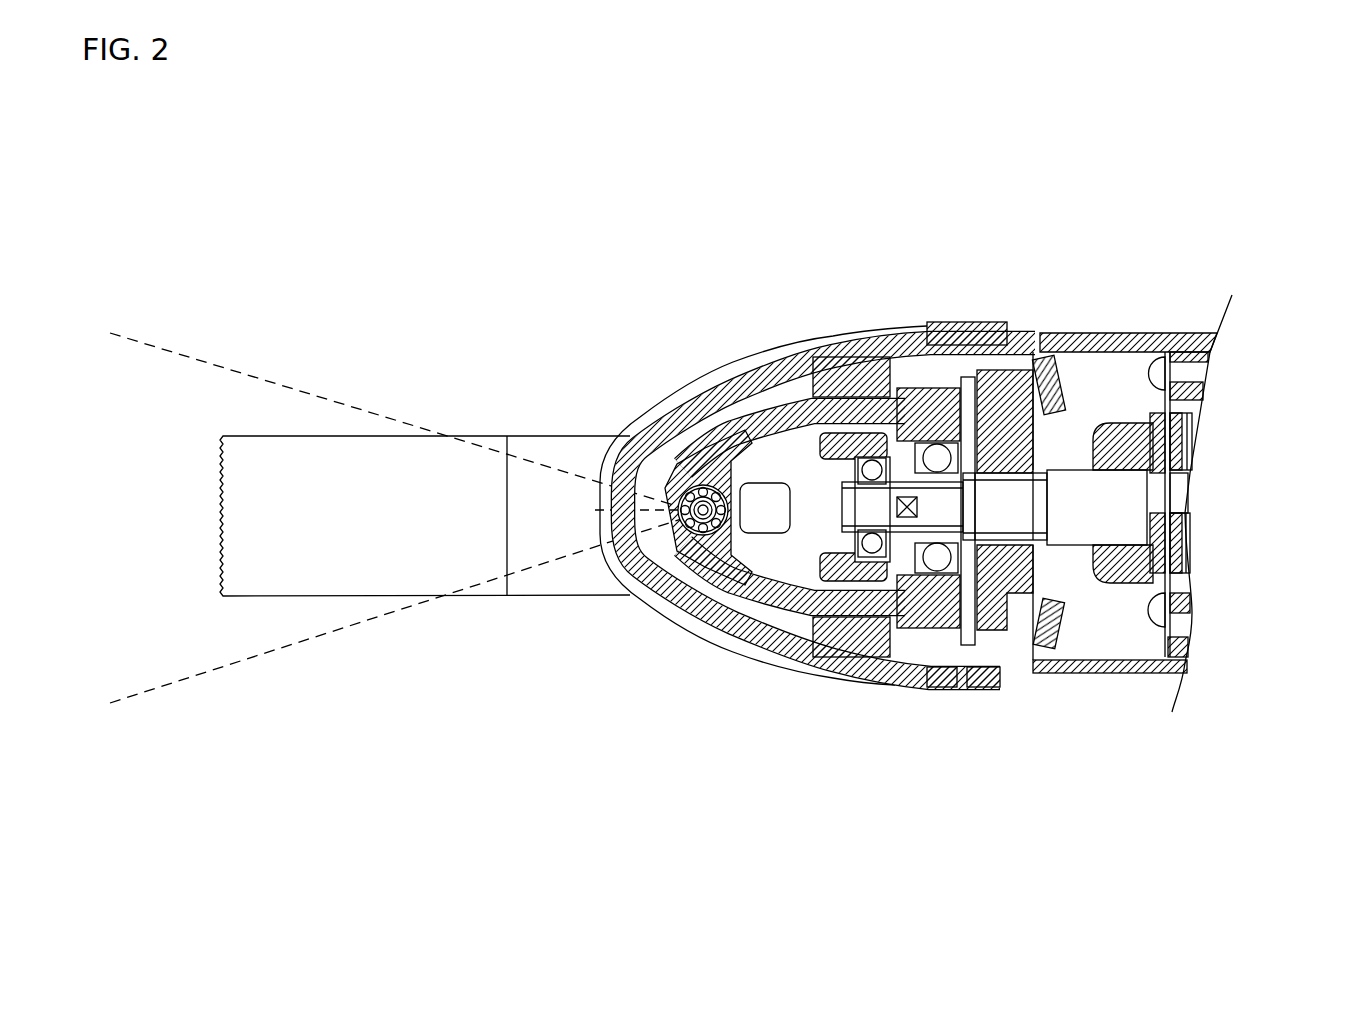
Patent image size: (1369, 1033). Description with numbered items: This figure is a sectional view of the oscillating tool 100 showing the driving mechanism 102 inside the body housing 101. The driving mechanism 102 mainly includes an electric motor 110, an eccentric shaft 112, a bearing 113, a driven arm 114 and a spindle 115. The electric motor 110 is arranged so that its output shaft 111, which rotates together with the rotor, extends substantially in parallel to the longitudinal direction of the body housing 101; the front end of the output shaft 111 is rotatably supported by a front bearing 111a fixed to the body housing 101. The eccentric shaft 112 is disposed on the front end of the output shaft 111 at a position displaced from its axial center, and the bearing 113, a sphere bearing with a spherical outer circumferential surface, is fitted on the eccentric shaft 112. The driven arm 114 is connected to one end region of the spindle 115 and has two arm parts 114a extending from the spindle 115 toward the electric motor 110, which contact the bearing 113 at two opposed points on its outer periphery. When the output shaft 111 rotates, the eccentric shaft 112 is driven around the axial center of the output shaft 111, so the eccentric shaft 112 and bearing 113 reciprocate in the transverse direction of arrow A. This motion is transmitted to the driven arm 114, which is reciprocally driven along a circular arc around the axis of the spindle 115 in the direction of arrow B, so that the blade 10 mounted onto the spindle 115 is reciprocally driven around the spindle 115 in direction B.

The blade 10 is at (262, 478).
The oscillating tool 100 is at (938, 287).
The body housing 101 is at (1145, 345).
The driving mechanism 102 is at (980, 372).
The electric motor 110 is at (1128, 606).
The output shaft 111 is at (1085, 490).
The front bearing 111a is at (940, 563).
The eccentric shaft 112 is at (862, 508).
The bearing 113 is at (878, 552).
The driven arm 114 is at (780, 556).
The arm parts 114a is at (867, 433).
The spindle 115 is at (695, 520).
The direction A is at (1327, 393).
The direction B is at (163, 352).